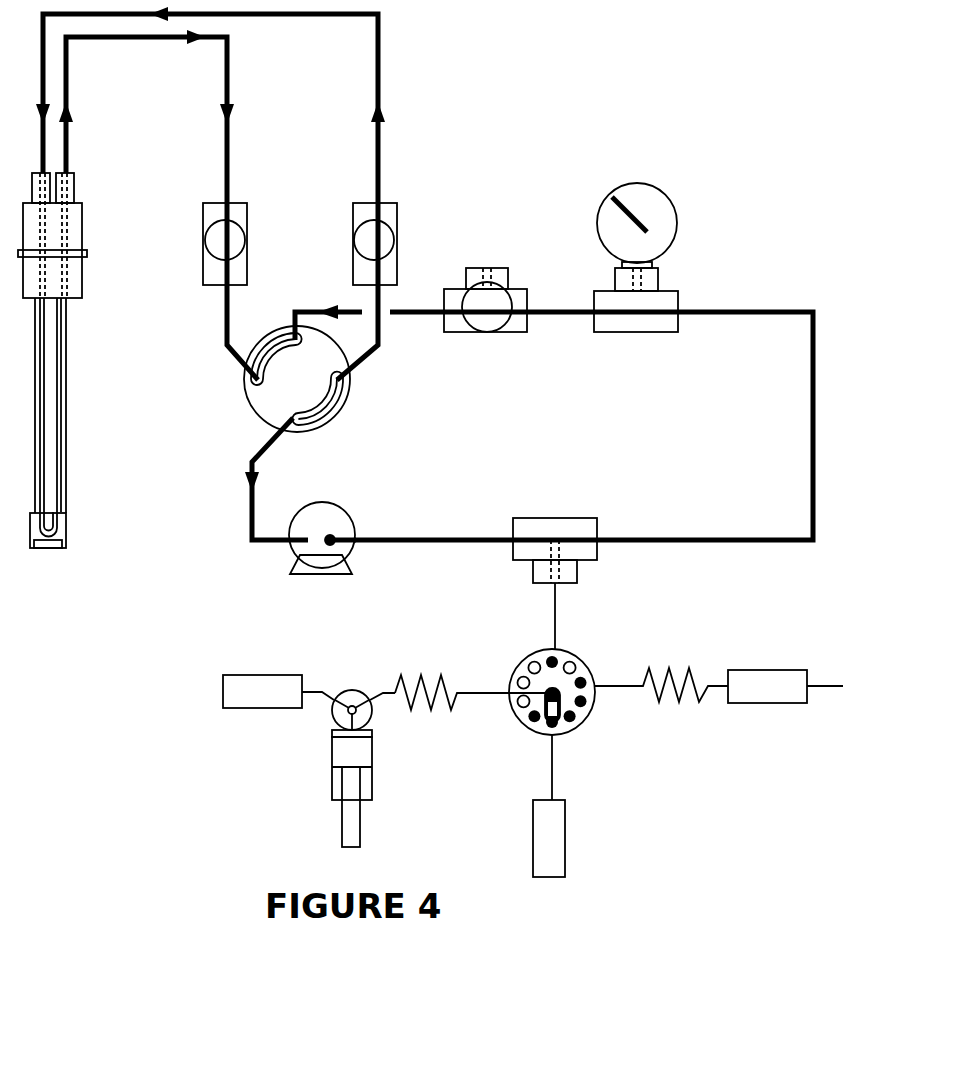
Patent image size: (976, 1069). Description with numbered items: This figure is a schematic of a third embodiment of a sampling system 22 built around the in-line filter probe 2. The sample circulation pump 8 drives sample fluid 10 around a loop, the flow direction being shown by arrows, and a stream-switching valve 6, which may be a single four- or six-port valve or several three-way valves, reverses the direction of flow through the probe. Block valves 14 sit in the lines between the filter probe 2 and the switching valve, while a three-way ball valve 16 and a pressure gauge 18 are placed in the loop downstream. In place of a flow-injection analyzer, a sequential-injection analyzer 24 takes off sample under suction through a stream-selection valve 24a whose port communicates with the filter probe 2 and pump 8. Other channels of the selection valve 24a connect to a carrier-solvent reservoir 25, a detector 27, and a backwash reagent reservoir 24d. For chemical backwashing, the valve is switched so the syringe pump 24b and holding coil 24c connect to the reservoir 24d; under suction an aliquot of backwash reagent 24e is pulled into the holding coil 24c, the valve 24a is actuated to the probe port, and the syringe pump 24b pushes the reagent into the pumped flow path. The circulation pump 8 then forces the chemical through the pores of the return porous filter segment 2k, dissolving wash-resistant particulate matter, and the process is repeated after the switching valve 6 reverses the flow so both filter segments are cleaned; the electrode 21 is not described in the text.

The filter probe 2 is at (87, 360).
The porous filter segment 2k is at (65, 465).
The electrode 21 is at (38, 450).
The stream-switching valve 6 is at (320, 420).
The sample circulation pump 8 is at (290, 565).
The sample fluid 10 is at (95, 42).
The block valves 14 is at (205, 245).
The three-way ball valve 16 is at (510, 290).
The pressure gauge 18 is at (675, 250).
The sampling system 22 is at (590, 135).
The sequential-injection analyzer 24 is at (524, 701).
The stream-selection valve 24a is at (568, 735).
The syringe pump 24b is at (372, 760).
The holding coil 24c is at (422, 675).
The backwash reagent reservoir 24d is at (567, 830).
The backwash reagent 24e is at (548, 833).
The carrier-solvent reservoir 25 is at (272, 675).
The detector 27 is at (767, 670).